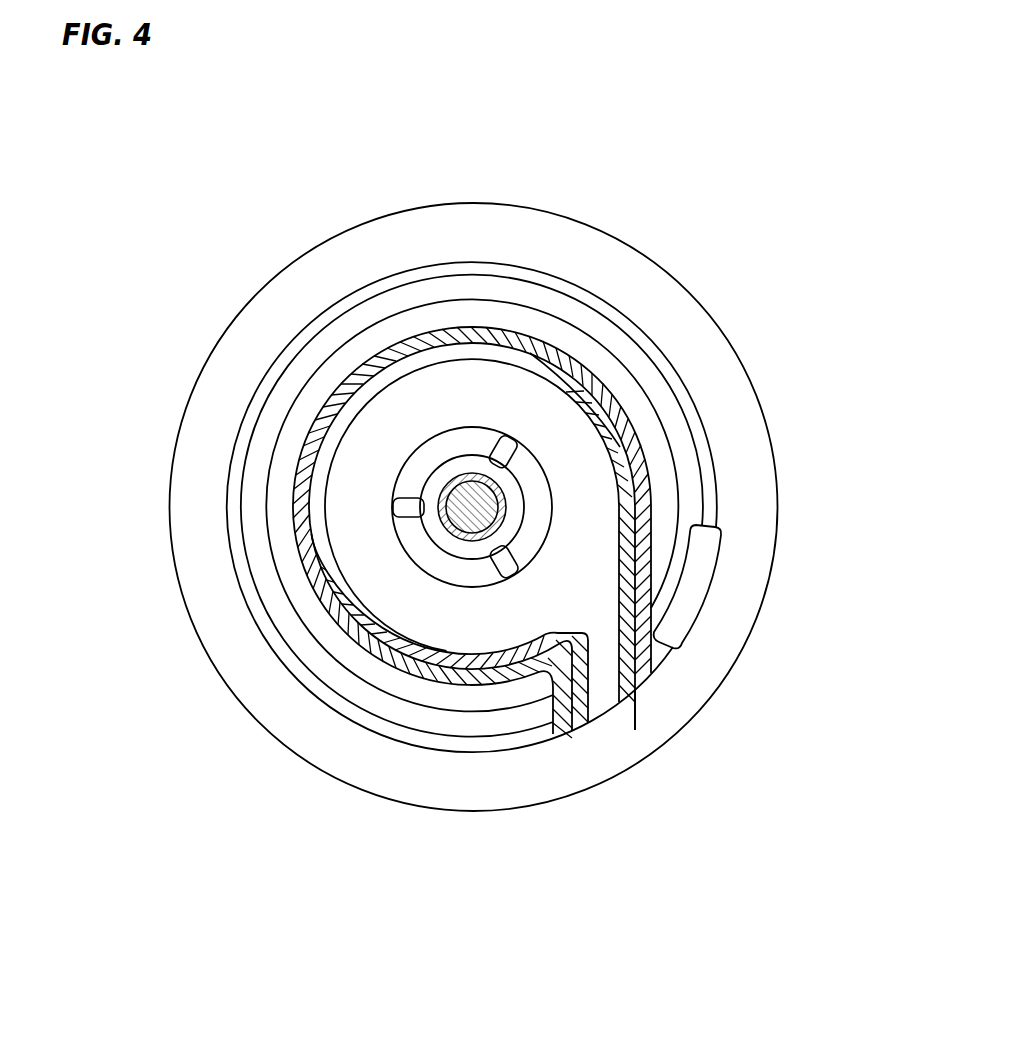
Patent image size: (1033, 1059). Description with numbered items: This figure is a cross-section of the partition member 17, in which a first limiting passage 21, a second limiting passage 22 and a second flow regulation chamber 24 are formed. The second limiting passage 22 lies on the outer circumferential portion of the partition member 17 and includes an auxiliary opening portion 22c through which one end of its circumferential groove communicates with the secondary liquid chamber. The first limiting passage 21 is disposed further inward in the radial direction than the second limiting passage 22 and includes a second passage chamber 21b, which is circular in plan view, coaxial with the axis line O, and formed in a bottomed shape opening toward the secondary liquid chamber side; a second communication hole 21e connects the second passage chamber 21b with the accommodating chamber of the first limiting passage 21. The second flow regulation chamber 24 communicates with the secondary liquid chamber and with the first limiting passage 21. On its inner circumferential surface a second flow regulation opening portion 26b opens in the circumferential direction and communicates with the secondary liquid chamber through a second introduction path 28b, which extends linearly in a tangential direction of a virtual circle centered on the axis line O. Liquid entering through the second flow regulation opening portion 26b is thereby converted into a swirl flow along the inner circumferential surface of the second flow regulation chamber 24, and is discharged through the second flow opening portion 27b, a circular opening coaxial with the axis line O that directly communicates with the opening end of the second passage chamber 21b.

The partition member 17 is at (702, 115).
The first limiting passage 21 is at (76, 492).
The second communication hole 21e is at (400, 466).
The second passage chamber 21b is at (393, 507).
The second limiting passage 22 is at (563, 507).
The auxiliary opening portion 22c is at (657, 647).
The second flow regulation chamber 24 is at (397, 590).
The second flow regulation opening portion 26b is at (575, 640).
The second flow opening portion 27b is at (515, 458).
The second introduction path 28b is at (608, 712).
The axis line O is at (472, 507).